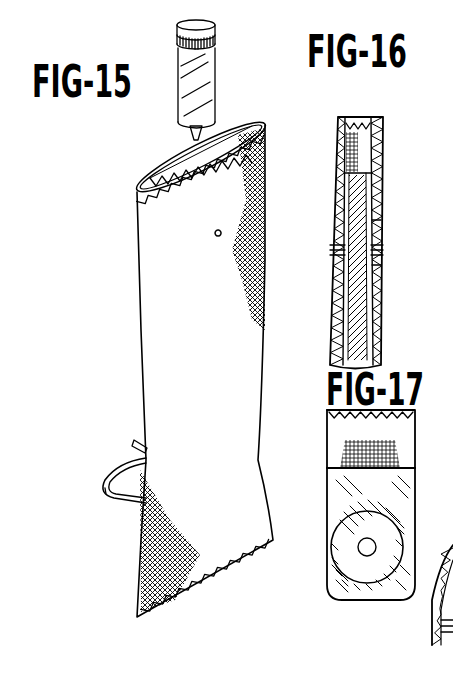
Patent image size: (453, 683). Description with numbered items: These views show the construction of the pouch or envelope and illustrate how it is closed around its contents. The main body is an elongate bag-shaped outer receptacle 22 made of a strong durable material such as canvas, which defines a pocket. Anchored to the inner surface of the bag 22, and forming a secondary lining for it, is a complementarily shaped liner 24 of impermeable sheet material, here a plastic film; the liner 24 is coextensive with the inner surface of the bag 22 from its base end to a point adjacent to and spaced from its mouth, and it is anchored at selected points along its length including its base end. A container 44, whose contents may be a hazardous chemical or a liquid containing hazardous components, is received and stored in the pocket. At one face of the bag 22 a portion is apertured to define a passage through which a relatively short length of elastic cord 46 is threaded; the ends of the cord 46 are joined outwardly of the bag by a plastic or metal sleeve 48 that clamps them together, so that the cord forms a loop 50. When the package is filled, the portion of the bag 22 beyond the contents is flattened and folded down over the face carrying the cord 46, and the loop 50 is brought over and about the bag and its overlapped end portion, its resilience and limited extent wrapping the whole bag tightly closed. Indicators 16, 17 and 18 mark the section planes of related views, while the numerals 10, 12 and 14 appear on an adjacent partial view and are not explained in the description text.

In FIG. 16, the container assembly 10 is at (452, 156).
In FIG. 16, the outer wall 12 is at (452, 268).
In FIG. 16, the inner wall 14 is at (412, 229).
In FIG. 15, the section line 16- 16 is at (220, 162).
In FIG. 16, the section line 17- 17 is at (360, 117).
In FIG. 15, the section line 18- 18 is at (210, 325).
In FIG. 15, the outer receptacle 22 is at (138, 220).
In FIG. 16, the outer receptacle 22 is at (345, 150).
In FIG. 17, the outer receptacle 22 is at (333, 445).
In FIG. 15, the liner 24 is at (250, 158).
In FIG. 16, the liner 24 is at (380, 192).
In FIG. 17, the liner 24 is at (340, 488).
In FIG. 15, the container 44 is at (215, 72).
In FIG. 15, the elastic cord 46 is at (119, 464).
In FIG. 15, the sleeve 48 is at (136, 440).
In FIG. 15, the loop 50 is at (101, 492).